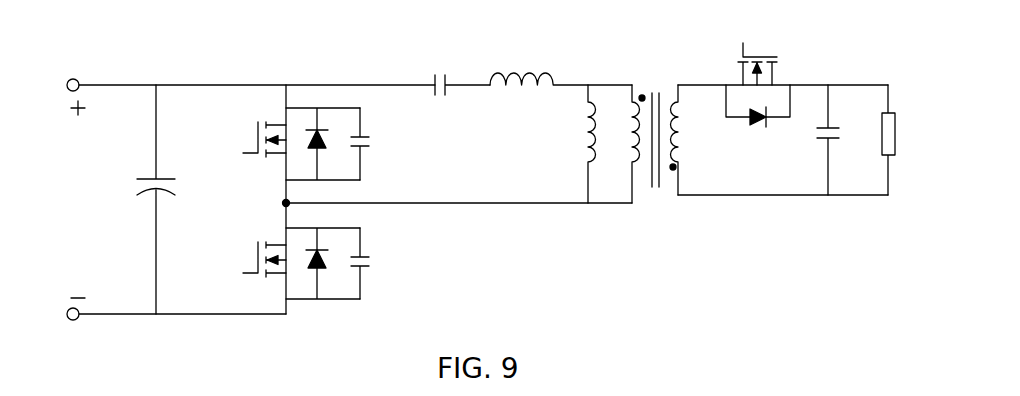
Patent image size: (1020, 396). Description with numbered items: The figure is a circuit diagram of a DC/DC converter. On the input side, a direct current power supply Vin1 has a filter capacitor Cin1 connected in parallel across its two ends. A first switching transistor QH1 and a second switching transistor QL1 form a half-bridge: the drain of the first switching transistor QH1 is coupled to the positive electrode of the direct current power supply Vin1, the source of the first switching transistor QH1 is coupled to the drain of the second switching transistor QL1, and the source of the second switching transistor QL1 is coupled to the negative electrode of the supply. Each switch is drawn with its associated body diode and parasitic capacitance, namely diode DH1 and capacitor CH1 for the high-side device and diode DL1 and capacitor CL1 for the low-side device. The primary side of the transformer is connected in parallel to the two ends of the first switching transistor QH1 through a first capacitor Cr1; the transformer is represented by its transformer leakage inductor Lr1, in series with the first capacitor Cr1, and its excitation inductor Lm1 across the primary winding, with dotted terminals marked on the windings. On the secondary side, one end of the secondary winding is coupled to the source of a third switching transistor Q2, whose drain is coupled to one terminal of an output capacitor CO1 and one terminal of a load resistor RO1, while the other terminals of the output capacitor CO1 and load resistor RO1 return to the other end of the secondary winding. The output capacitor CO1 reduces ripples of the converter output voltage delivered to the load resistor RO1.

The direct current power supply Vin1 is at (75, 187).
The filter capacitor Cin1 is at (182, 199).
The first switching transistor QH1 is at (247, 139).
The second switching transistor QL1 is at (247, 259).
The high-side body diode DH1 is at (323, 144).
The low-side body diode DL1 is at (323, 263).
The high-side parasitic capacitor CH1 is at (379, 144).
The low-side parasitic capacitor CL1 is at (376, 263).
The first capacitor Cr1 is at (454, 70).
The transformer leakage inductor Lr1 is at (561, 68).
The excitation inductor Lm1 is at (569, 144).
The third switching transistor Q2 is at (758, 74).
The output capacitor CO1 is at (845, 140).
The load resistor RO1 is at (908, 140).